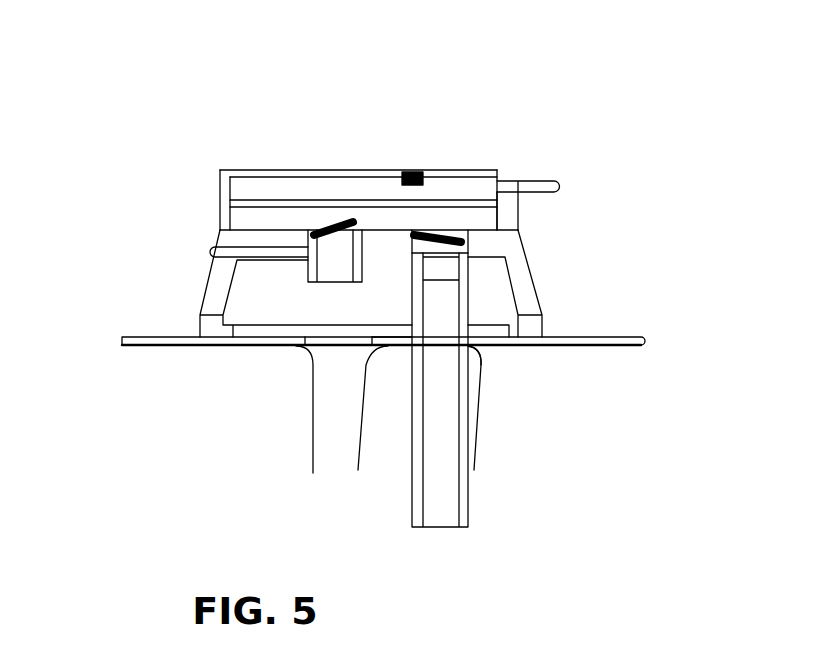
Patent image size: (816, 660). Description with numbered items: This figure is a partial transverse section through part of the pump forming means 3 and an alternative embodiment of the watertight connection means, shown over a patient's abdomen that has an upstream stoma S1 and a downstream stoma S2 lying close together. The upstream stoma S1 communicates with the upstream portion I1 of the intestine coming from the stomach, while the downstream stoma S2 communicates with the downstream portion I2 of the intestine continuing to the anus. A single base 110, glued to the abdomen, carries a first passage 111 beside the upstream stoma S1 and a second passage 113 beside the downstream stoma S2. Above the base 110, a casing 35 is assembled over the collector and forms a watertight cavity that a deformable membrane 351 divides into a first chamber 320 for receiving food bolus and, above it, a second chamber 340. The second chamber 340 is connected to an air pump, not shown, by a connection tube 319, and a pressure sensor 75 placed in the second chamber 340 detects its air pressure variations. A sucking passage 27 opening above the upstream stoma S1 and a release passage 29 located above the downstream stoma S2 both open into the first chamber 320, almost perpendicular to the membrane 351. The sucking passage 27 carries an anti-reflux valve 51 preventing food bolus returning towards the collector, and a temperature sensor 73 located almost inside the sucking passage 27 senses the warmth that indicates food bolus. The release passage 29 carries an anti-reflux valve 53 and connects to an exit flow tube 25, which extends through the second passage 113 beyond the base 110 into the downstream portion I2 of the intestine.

The pump forming means 3 is at (229, 156).
The pressure sensor 75 is at (420, 163).
The casing 35 is at (455, 167).
The connection tube 319 is at (529, 178).
The second chamber 340 is at (324, 190).
The first chamber 320 is at (369, 211).
The deformable membrane 351 is at (490, 205).
The anti-reflux valve 51 is at (322, 219).
The anti-reflux valve 53 is at (486, 234).
The temperature sensor 73 is at (203, 247).
The release passage 29 is at (480, 277).
The sucking passage 27 is at (297, 261).
The first passage 111 is at (383, 328).
The base 110 is at (113, 343).
The second passage 113 is at (488, 364).
The downstream stoma S2 is at (481, 358).
The downstream portion of the intestine I2 is at (478, 438).
The upstream stoma S1 is at (287, 349).
The upstream portion of the intestine I1 is at (302, 402).
The exit flow tube 25 is at (471, 519).